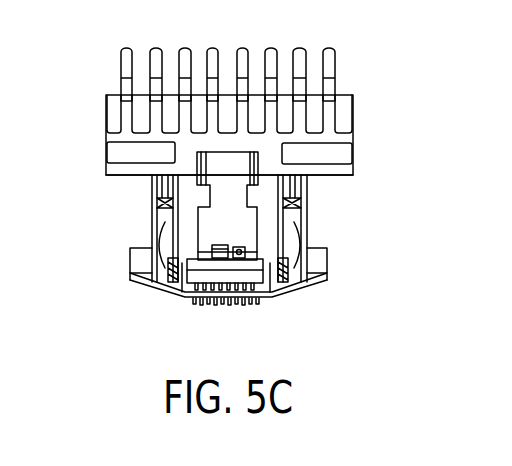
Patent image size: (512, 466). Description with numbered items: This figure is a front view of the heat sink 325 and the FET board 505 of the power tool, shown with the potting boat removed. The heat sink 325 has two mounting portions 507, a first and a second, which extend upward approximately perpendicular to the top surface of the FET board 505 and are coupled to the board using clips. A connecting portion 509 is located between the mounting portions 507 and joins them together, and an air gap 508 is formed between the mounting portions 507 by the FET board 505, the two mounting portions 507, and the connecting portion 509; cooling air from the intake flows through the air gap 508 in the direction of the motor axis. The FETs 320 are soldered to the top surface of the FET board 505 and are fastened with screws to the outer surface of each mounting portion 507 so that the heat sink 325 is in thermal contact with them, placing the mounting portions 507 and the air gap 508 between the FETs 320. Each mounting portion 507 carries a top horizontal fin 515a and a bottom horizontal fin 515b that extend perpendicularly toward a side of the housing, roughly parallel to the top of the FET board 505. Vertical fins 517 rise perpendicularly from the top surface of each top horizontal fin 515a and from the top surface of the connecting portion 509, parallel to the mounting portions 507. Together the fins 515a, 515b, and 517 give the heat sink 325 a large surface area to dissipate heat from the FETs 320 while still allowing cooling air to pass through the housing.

The vertical fins 517 is at (144, 56).
The connecting portion 509 is at (230, 143).
The top horizontal fin 515a is at (113, 140).
The bottom horizontal fin 515b is at (123, 168).
The air gap 508 is at (223, 216).
The FETs 320 is at (155, 224).
The FET board 505 is at (138, 272).
The mounting portions 507 is at (245, 294).
The heat sink 325 is at (387, 63).